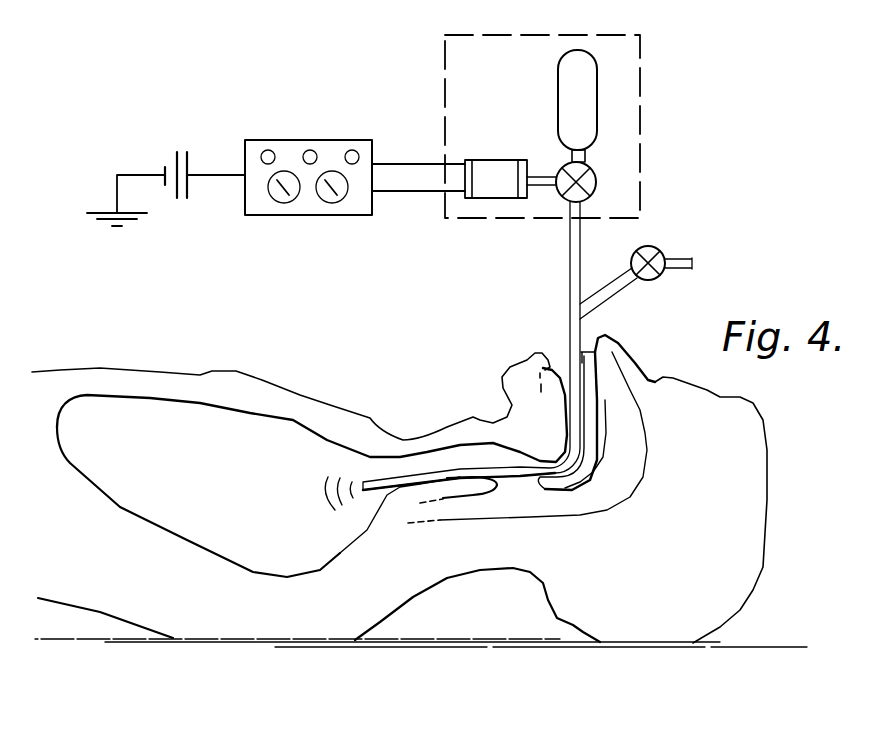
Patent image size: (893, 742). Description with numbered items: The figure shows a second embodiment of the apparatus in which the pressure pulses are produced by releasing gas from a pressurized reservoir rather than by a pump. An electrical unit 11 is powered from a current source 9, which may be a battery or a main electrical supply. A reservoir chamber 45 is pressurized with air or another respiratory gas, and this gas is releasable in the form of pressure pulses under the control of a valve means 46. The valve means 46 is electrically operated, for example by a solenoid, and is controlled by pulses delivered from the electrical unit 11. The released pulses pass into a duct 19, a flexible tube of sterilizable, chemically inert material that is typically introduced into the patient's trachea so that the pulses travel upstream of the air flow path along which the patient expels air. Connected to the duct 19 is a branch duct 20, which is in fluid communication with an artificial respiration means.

The current source 9 is at (172, 152).
The electrical unit 11 is at (308, 141).
The reservoir chamber 45 is at (561, 91).
The valve means 46 is at (591, 170).
The duct 19 is at (570, 328).
The branch duct 20 is at (618, 285).